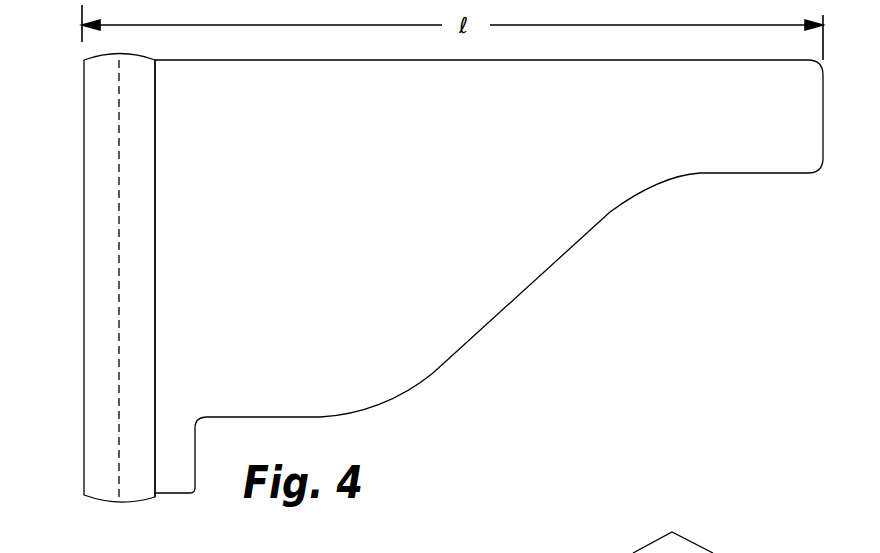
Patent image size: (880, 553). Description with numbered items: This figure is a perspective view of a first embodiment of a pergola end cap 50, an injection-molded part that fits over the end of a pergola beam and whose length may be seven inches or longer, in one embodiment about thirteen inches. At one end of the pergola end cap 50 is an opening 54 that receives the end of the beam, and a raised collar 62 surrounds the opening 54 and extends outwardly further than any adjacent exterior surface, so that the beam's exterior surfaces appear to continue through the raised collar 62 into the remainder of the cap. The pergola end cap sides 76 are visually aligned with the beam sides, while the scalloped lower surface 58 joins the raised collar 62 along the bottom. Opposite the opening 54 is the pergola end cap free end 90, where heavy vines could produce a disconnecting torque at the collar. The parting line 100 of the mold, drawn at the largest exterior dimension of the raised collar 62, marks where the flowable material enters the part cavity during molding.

The pergola end cap 50 is at (489, 116).
The opening 54 is at (74, 401).
The lower surface 58 is at (433, 373).
The raised collar 62 is at (135, 370).
The pergola end cap sides 76 is at (260, 390).
The parting line 100 is at (118, 203).
The pergola end cap free end 90 is at (832, 552).